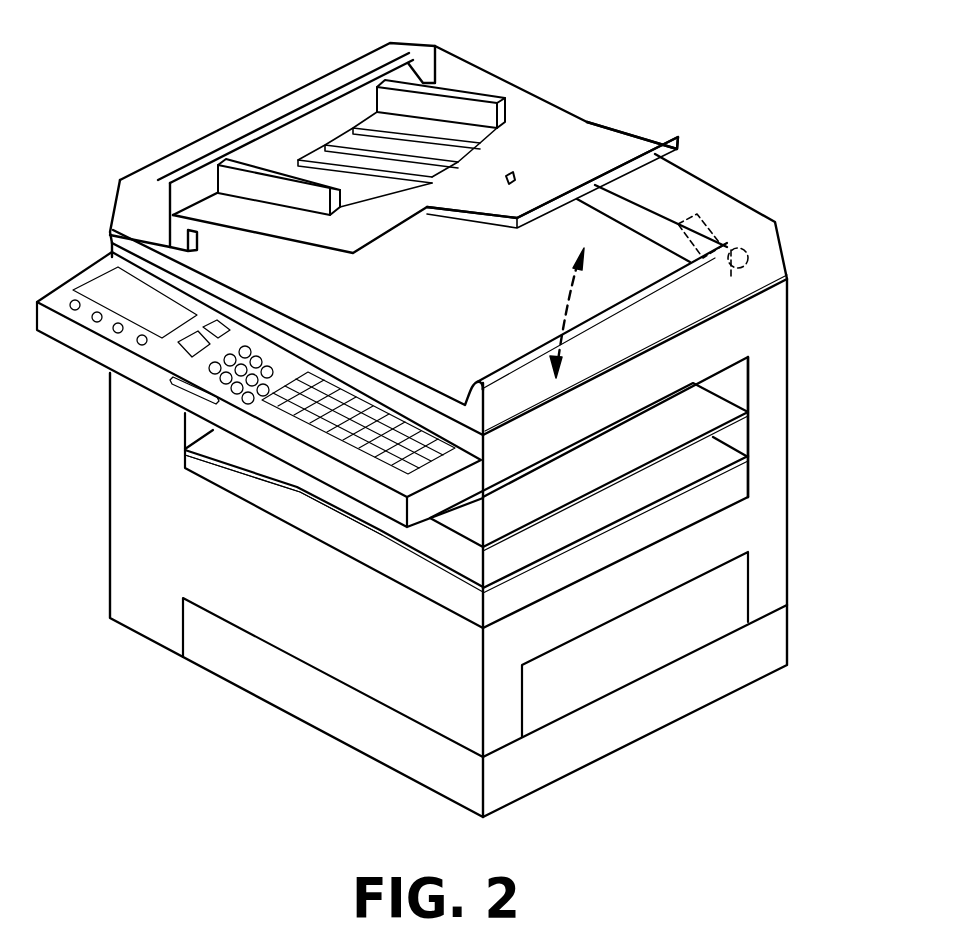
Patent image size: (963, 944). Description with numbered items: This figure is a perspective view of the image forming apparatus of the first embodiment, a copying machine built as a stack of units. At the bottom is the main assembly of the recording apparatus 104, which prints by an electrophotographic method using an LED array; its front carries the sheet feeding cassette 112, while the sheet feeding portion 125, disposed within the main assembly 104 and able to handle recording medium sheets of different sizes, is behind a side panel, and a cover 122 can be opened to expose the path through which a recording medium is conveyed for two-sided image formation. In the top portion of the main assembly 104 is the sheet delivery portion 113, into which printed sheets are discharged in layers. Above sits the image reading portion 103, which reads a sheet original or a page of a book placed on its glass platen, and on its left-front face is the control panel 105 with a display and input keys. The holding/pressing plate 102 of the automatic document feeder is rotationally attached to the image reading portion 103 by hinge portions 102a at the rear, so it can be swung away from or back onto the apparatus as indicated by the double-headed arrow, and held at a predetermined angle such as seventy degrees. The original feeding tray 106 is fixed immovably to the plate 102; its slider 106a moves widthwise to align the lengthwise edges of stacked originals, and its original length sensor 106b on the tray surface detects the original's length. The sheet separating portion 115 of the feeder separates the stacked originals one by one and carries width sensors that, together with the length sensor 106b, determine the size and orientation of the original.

The holding/pressing plate 102 is at (667, 310).
The hinge portion 102a is at (720, 238).
The image reading portion 103 is at (690, 355).
The main assembly of a recording apparatus 104 is at (755, 515).
The control panel 105 is at (215, 413).
The original feeding tray 106 is at (637, 147).
The slider 106a is at (448, 107).
The original length sensor 106b is at (513, 173).
The sheet feeding cassette 112 is at (220, 655).
The sheet delivery portion 113 is at (480, 518).
The sheet separating portion 115 is at (172, 165).
The cover 122 is at (303, 513).
The sheet feeding portion 125 is at (667, 662).